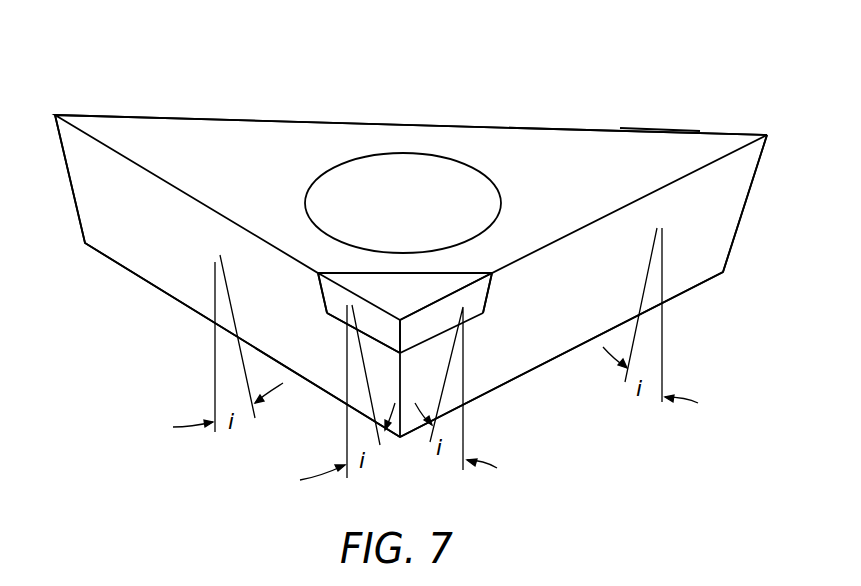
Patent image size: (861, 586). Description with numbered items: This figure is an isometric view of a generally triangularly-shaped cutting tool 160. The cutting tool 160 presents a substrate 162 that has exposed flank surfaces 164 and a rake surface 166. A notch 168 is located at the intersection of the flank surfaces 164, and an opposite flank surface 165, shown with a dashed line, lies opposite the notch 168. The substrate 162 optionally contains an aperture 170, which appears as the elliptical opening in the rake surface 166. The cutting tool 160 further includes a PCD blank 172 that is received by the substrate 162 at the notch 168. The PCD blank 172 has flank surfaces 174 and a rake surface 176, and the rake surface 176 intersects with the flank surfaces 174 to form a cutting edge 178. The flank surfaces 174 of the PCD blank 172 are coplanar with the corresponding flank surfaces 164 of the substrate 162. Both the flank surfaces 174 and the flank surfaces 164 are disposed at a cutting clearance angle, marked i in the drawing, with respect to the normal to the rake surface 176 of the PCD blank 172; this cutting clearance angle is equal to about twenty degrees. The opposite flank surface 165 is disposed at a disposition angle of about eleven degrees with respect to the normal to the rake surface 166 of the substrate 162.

The cutting tool 160 is at (542, 93).
The substrate 162 is at (742, 169).
The flank surfaces 164 is at (115, 213).
The opposite flank surface 165 is at (579, 155).
The rake surface 166 is at (221, 134).
The notch 168 is at (390, 277).
The aperture 170 is at (393, 168).
The PCD blank 172 is at (434, 283).
The flank surfaces 174 is at (336, 293).
The rake surface 176 is at (413, 295).
The cutting edge 178 is at (383, 302).